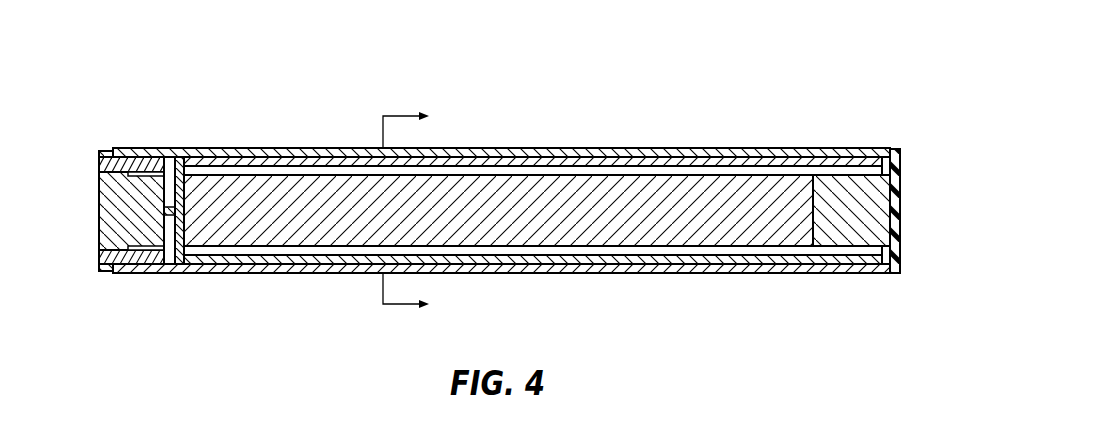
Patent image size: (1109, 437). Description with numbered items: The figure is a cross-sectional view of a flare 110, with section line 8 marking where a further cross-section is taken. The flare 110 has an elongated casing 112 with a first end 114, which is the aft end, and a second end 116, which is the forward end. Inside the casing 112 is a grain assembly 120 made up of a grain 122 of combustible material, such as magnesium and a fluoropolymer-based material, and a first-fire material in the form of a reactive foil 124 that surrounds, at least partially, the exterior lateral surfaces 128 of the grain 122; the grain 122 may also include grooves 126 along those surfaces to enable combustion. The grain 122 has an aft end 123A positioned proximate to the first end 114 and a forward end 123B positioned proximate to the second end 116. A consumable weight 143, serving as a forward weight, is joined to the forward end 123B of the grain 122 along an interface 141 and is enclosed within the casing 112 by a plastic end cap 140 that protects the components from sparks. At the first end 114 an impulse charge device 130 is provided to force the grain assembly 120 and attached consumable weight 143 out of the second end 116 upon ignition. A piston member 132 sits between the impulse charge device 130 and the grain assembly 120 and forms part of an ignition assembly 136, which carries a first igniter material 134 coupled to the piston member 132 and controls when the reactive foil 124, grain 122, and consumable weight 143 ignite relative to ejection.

The flare 110 is at (451, 66).
The casing 112 is at (320, 148).
The first end 114 is at (78, 157).
The second end 116 is at (925, 184).
The grain assembly 120 is at (683, 62).
The grain 122 is at (605, 188).
The reactive foil 124 is at (592, 156).
The grooves 126 is at (753, 174).
The exterior lateral surfaces 128 is at (528, 166).
The aft end 123A is at (193, 184).
The forward end 123B is at (815, 182).
The impulse charge device 130 is at (110, 212).
The piston member 132 is at (147, 251).
The first igniter material 134 is at (183, 218).
The ignition assembly 136 is at (240, 340).
The end cap 140 is at (897, 237).
The interface 141 is at (812, 214).
The consumable weight 143 is at (848, 218).
The section line 8- 8 is at (413, 211).